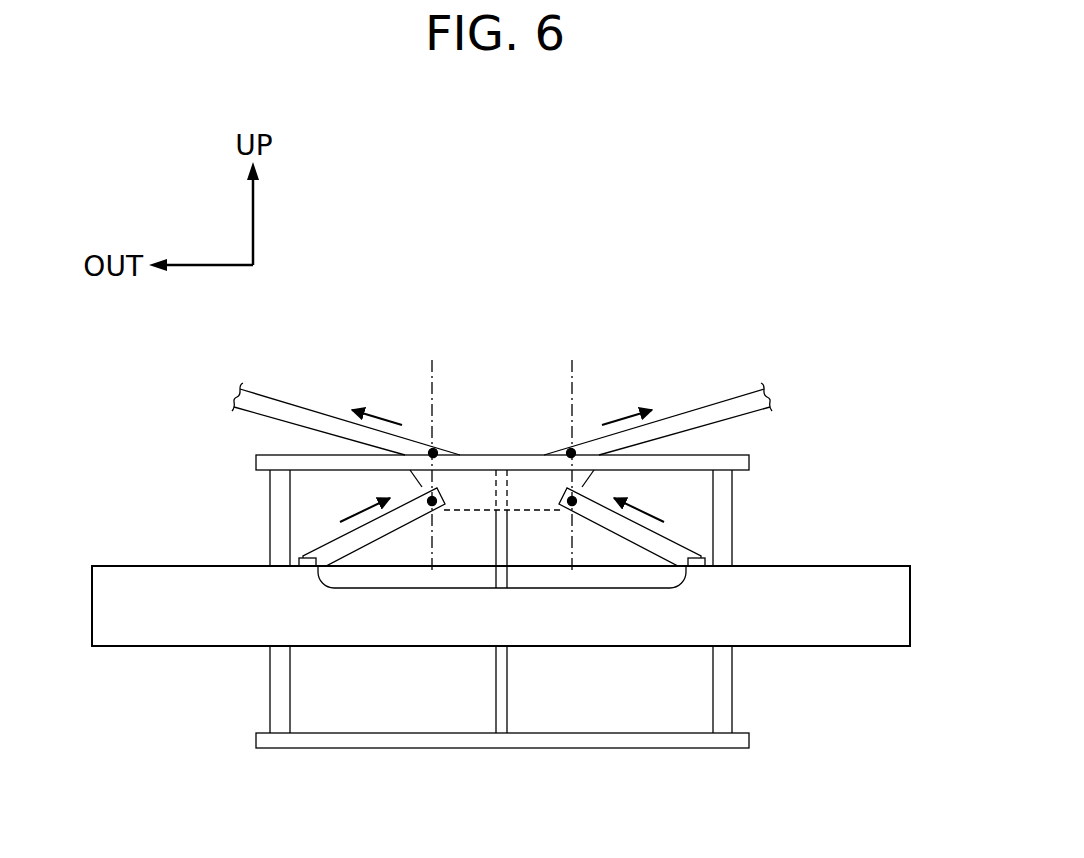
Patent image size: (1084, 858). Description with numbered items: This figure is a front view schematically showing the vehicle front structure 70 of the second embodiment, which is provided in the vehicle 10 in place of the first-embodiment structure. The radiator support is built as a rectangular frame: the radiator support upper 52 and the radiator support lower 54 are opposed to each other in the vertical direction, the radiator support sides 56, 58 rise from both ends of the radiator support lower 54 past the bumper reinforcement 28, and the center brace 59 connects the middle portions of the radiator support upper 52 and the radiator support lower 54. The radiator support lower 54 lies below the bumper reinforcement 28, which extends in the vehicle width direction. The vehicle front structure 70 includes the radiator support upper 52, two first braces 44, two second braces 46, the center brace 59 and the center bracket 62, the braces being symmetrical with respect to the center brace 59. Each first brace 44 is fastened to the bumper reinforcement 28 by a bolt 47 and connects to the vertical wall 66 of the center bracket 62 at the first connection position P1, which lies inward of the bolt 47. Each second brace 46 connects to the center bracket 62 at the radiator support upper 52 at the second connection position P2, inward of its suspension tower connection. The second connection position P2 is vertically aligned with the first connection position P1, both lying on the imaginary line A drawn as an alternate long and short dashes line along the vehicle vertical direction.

The vehicle 10 is at (783, 274).
The bumper reinforcement 28 is at (856, 586).
The first brace 44 is at (369, 543).
The second brace 46 is at (300, 405).
The bolt 47 is at (306, 556).
The radiator support upper 52 is at (478, 462).
The radiator support lower 54 is at (562, 742).
The radiator support side 56 is at (286, 679).
The radiator support side 58 is at (723, 685).
The center brace 59 is at (508, 679).
The center bracket 62 is at (528, 492).
The vertical wall 66 is at (472, 492).
The vehicle front structure 70 is at (453, 530).
The first connection position P1 is at (428, 505).
The second connection position P2 is at (436, 448).
The imaginary line A is at (430, 392).